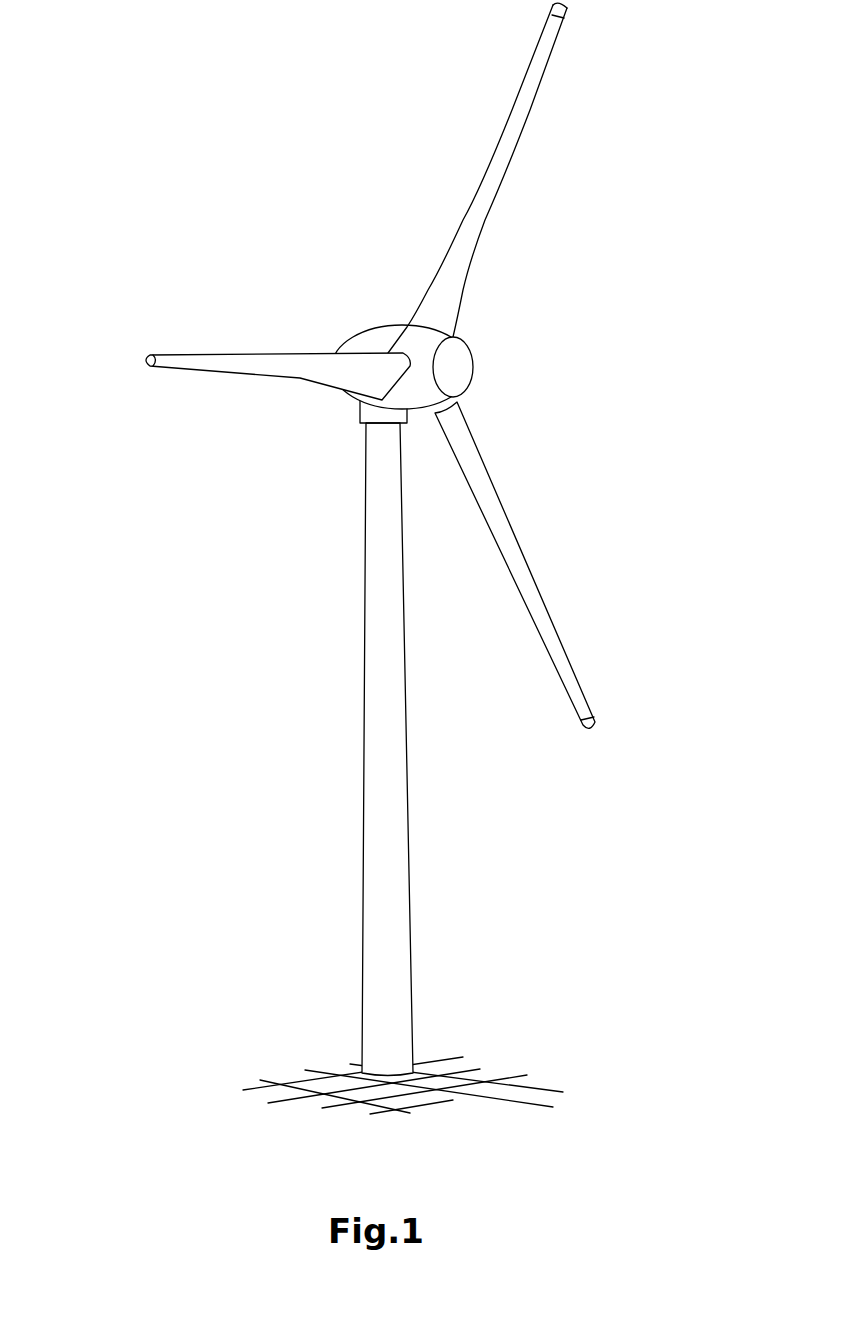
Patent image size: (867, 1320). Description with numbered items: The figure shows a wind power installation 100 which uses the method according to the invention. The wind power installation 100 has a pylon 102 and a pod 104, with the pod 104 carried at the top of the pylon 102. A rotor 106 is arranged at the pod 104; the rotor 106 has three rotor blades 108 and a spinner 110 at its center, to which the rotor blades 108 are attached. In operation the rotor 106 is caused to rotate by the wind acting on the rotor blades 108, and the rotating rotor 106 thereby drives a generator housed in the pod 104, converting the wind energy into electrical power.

The wind power installation 100 is at (223, 611).
The pylon 102 is at (392, 847).
The pod 104 is at (378, 342).
The rotor 106 is at (546, 292).
The rotor blades 108 is at (527, 95).
The spinner 110 is at (460, 368).